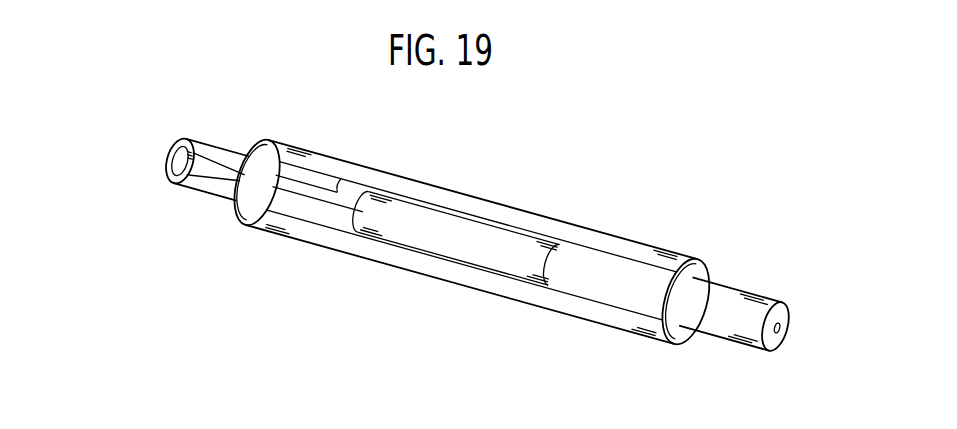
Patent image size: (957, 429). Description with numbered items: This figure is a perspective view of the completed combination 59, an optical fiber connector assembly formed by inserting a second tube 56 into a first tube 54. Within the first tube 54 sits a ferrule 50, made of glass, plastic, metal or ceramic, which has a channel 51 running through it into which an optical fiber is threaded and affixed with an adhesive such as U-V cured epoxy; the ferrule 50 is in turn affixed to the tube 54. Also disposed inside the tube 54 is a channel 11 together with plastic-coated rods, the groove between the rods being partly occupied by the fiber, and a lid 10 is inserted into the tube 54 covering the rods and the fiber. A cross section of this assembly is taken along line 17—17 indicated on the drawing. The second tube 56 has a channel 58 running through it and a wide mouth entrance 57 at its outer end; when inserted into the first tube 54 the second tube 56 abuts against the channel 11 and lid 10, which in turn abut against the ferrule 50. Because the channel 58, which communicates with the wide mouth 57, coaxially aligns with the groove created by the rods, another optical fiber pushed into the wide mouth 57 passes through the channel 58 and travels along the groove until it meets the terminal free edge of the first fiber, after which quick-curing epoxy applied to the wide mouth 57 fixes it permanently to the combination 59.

The lid 10 is at (450, 238).
The channel 11 is at (414, 249).
The section line 17— 17 is at (482, 200).
The ferrule 50 is at (733, 320).
The channel 51 is at (783, 328).
The tube 54 is at (593, 232).
The second tube 56 is at (236, 151).
The wide mouth entrance 57 is at (187, 143).
The channel 58 is at (334, 177).
The combination 59 is at (632, 172).